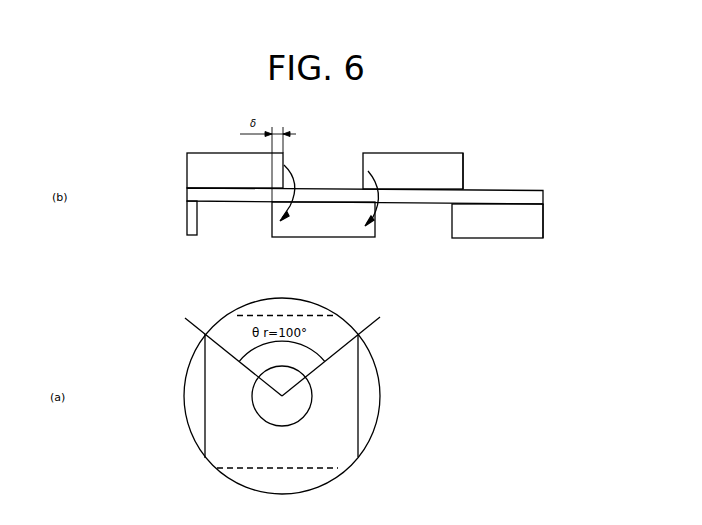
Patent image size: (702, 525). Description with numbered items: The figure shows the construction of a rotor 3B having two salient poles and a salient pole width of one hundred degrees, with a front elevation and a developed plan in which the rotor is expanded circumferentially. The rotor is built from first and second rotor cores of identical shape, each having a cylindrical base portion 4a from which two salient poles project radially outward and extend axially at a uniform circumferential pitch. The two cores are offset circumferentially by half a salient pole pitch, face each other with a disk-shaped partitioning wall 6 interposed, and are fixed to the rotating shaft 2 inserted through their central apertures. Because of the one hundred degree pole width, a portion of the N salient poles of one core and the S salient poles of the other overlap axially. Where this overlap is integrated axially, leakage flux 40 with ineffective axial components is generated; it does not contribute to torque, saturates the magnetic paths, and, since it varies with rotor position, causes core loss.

The rotating shaft 2 is at (307, 398).
The rotor 3B is at (183, 132).
The base portion 4a is at (333, 443).
The partitioning wall 6 is at (545, 197).
The leakage flux 40 is at (301, 177).